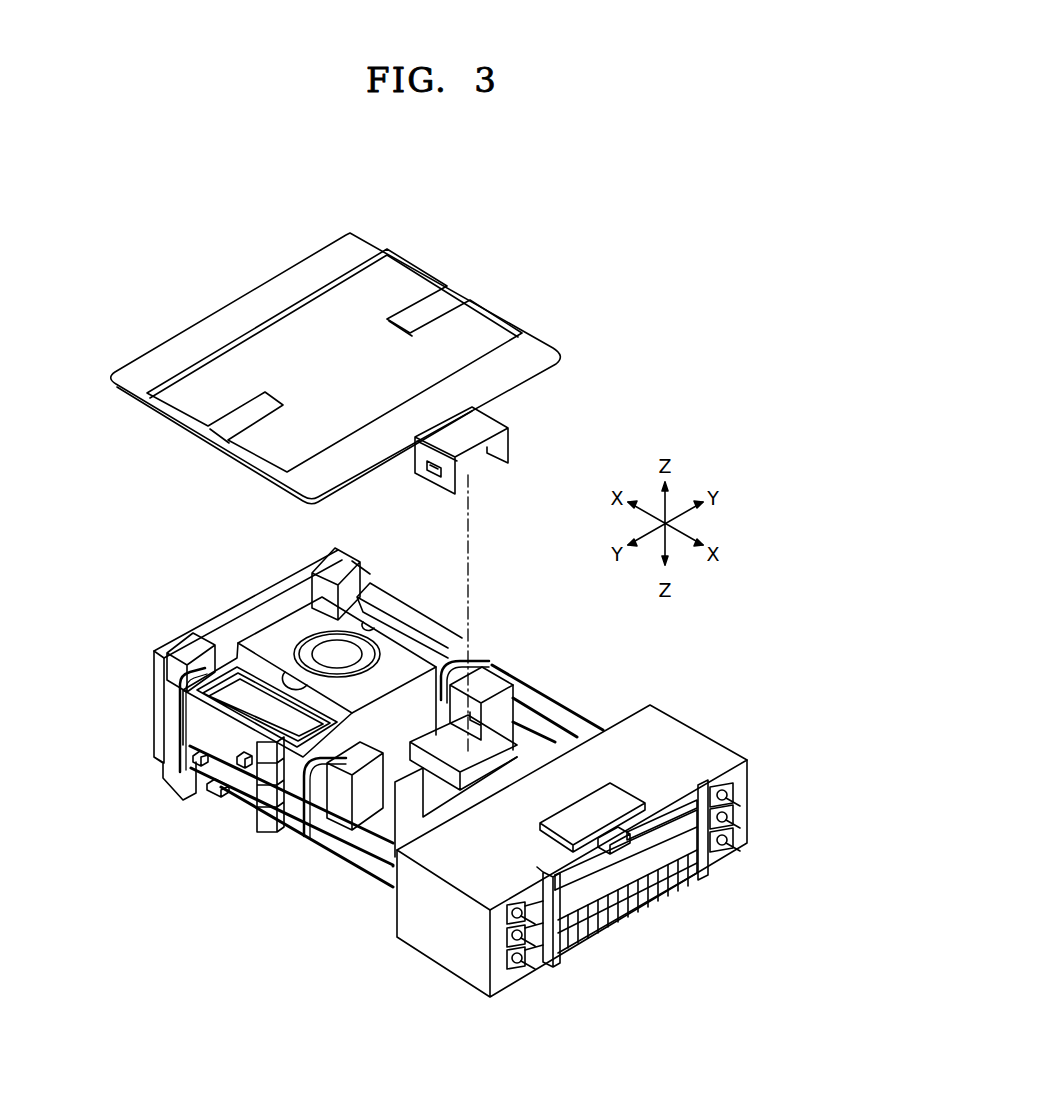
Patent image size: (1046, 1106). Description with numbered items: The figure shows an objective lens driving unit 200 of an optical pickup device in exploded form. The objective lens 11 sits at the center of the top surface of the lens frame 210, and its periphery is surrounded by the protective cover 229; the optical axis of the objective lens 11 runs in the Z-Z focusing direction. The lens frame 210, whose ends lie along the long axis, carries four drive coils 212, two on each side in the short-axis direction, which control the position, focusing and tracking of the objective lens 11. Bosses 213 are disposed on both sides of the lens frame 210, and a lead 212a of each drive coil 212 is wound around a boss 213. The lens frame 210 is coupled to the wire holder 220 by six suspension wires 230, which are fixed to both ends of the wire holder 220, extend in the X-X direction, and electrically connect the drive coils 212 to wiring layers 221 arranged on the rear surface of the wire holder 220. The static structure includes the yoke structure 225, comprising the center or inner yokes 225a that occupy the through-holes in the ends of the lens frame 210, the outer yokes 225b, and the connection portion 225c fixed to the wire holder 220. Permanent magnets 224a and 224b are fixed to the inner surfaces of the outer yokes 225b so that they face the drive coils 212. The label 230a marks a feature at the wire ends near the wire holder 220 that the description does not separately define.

The objective lens driving unit 200 is at (673, 359).
The protective cover 229 is at (258, 297).
The objective lens 11 is at (345, 650).
The lens frame 210 is at (302, 621).
The drive coils 212 is at (273, 832).
The lead 212a is at (179, 731).
The bosses 213 is at (196, 785).
The wire holder 220 is at (682, 736).
The wiring layers 221 is at (740, 840).
The permanent magnets 224a is at (336, 566).
The permanent magnets 224b is at (477, 686).
The yoke structure 225 is at (448, 530).
The center or inner yokes 225a is at (405, 618).
The outer yokes 225b is at (235, 604).
The connection portion 225c is at (475, 641).
The suspension wires 230 is at (540, 737).
The cable connector 230a is at (722, 852).